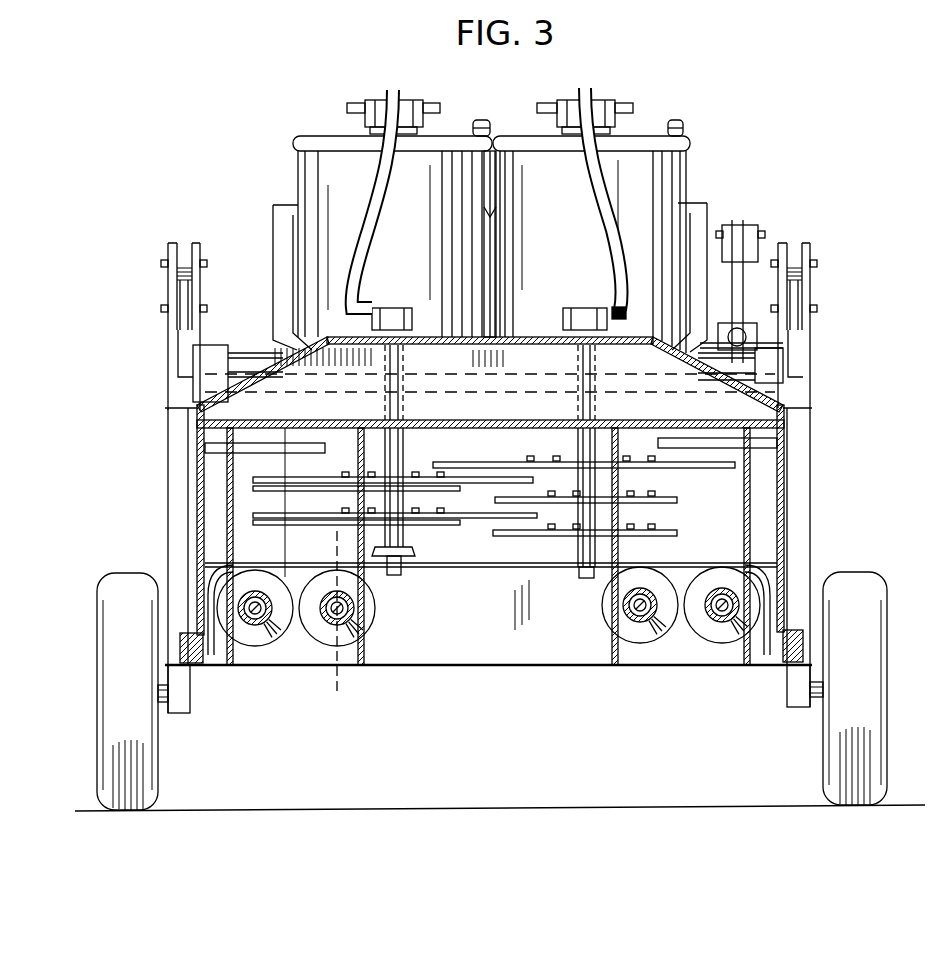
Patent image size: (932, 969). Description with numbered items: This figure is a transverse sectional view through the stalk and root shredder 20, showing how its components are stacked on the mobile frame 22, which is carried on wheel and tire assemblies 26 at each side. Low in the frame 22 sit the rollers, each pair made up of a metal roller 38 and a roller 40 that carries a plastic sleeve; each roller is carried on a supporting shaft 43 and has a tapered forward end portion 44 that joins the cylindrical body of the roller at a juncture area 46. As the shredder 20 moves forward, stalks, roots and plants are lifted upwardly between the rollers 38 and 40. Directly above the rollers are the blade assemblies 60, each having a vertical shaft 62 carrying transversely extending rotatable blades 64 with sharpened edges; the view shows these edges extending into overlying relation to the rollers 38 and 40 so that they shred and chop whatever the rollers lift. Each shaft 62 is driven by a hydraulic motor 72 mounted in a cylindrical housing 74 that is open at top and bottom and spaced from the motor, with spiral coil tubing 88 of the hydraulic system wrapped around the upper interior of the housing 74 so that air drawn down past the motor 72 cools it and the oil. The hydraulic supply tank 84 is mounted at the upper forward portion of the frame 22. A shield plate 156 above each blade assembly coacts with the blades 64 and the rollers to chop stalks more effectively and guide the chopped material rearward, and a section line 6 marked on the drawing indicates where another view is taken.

The stalk and root shredder 20 is at (787, 223).
The mobile frame 22 is at (740, 667).
The wheel and tire assemblies 26 is at (860, 583).
The metal roller 38 is at (707, 637).
The roller 40 is at (650, 642).
The supporting shaft 43 is at (353, 627).
The tapered forward end portion 44 is at (350, 596).
The juncture area 46 is at (313, 620).
The blade assembly 60 is at (525, 540).
The vertical shaft 62 is at (587, 577).
The rotatable blades 64 is at (683, 468).
The hydraulic motor 72 is at (370, 123).
The housing 74 is at (667, 178).
The supply tank 84 is at (773, 392).
The spiral coil tubing 88 is at (680, 135).
The shield plate 156 is at (760, 440).
The section line 6- 6 is at (340, 537).